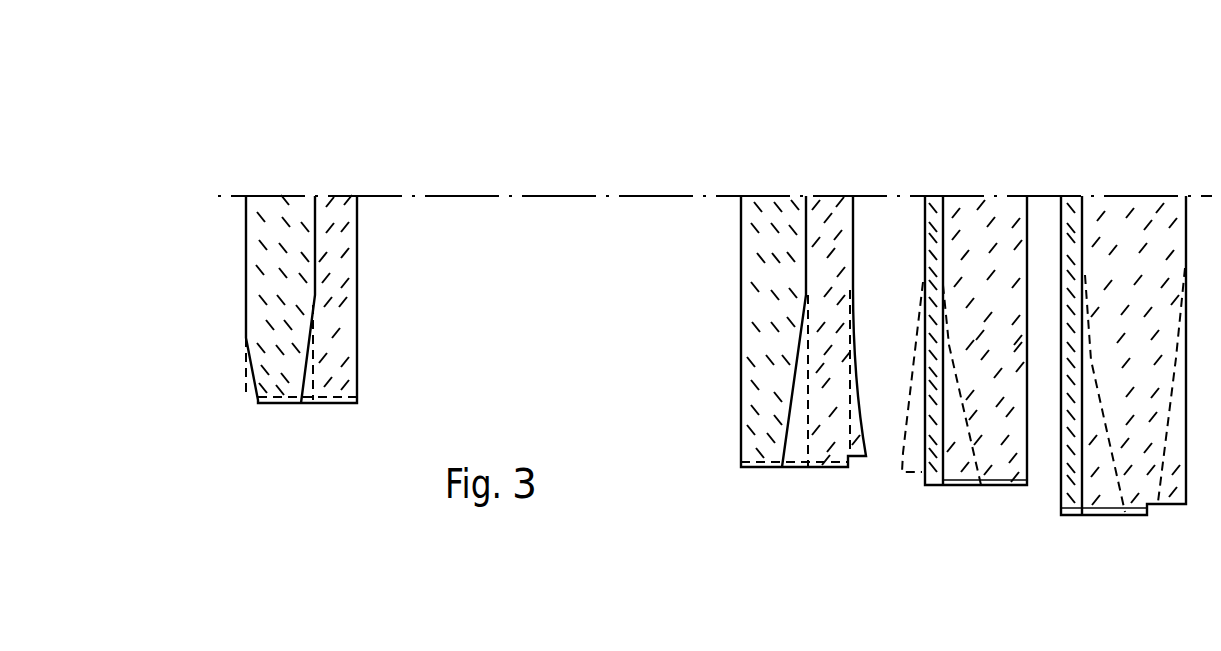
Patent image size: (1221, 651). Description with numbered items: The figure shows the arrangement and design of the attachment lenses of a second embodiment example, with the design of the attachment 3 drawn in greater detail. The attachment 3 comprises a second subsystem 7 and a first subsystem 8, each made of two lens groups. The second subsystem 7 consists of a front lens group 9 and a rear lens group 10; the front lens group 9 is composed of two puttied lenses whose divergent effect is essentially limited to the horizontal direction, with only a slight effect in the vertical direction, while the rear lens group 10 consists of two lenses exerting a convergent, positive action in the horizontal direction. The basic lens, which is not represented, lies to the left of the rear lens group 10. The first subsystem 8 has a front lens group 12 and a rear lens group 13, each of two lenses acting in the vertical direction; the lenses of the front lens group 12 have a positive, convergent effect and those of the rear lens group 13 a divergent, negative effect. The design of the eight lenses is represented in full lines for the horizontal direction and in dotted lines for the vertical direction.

The attachment 3 is at (1207, 59).
The second subsystem 7 is at (858, 111).
The first subsystem 8 is at (1207, 114).
The front lens group 9 is at (779, 180).
The rear lens group 10 is at (287, 176).
The front lens group 12 is at (1139, 172).
The rear lens group 13 is at (976, 175).